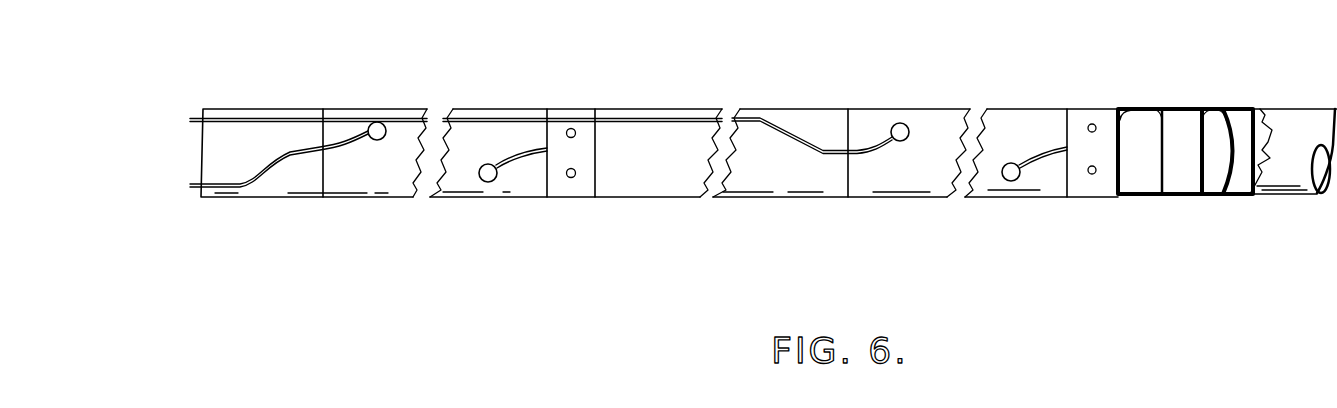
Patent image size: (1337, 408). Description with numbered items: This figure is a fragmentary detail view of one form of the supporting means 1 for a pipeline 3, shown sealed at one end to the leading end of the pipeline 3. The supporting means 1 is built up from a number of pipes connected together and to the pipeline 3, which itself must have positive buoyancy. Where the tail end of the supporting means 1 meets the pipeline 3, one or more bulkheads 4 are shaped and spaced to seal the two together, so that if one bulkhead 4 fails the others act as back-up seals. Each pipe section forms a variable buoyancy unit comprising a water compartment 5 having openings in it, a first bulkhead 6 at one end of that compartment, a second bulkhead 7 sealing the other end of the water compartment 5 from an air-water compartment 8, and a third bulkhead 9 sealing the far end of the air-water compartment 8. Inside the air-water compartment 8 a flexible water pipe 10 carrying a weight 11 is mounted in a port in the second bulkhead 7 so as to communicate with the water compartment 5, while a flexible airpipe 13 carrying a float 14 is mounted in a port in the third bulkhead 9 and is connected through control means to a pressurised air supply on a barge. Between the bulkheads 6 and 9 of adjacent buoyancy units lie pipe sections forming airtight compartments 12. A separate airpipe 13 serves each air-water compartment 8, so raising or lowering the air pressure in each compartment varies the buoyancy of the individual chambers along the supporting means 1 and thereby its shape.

The supporting means 1 is at (632, 203).
The pipeline 3 is at (1192, 196).
The bulkhead 4 is at (1158, 116).
The water compartment 5 is at (563, 188).
The first bulkhead 6 is at (595, 184).
The second bulkhead 7 is at (547, 174).
The air-water compartment 8 is at (455, 188).
The third bulkhead 9 is at (325, 180).
The flexible water pipe 10 is at (522, 150).
The weight 11 is at (488, 182).
The airtight compartment 12 is at (276, 190).
The flexible airpipe 13 is at (403, 120).
The float 14 is at (371, 125).